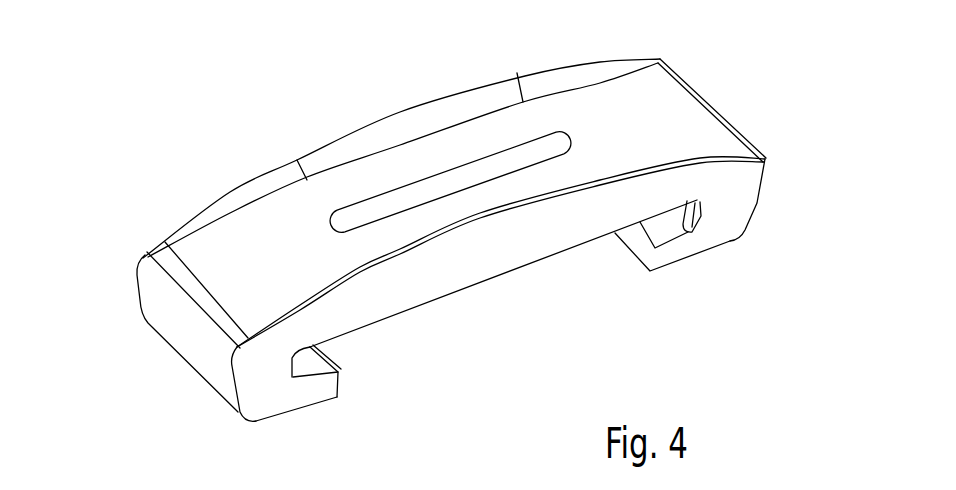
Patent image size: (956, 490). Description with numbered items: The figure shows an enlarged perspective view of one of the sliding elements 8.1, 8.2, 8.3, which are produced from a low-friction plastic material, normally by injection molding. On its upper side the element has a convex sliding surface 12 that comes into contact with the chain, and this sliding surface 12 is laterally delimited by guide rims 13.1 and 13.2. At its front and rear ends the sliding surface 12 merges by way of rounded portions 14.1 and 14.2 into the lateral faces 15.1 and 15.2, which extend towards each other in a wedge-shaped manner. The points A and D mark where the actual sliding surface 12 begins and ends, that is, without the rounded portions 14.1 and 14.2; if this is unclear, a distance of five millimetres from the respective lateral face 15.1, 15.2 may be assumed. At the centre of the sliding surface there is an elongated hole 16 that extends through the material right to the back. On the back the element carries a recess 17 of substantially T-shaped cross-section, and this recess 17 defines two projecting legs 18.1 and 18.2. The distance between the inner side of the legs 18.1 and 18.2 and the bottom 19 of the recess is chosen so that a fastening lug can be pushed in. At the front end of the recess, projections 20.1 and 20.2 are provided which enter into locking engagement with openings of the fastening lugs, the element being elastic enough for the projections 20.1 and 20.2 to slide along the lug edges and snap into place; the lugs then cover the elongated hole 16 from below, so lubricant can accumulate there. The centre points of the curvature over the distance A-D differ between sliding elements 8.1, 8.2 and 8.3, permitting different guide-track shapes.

The sliding element 8.1 is at (344, 205).
The sliding element 8.2 is at (520, 87).
The sliding element 8.3 is at (206, 290).
The sliding surface 12 is at (683, 120).
The guide rim 13.1 is at (370, 268).
The guide rim 13.2 is at (368, 143).
The rounded portion 14.1 is at (228, 357).
The rounded portion 14.2 is at (766, 160).
The lateral face 15.1 is at (156, 320).
The lateral face 15.2 is at (765, 203).
The elongated hole 16 is at (470, 172).
The recess 17 is at (533, 340).
The projecting leg 18.1 is at (351, 410).
The projecting leg 18.2 is at (718, 268).
The bottom 19 is at (567, 250).
The projection 20.1 is at (302, 373).
The projection 20.2 is at (700, 230).
The point A is at (238, 343).
The point D is at (745, 140).